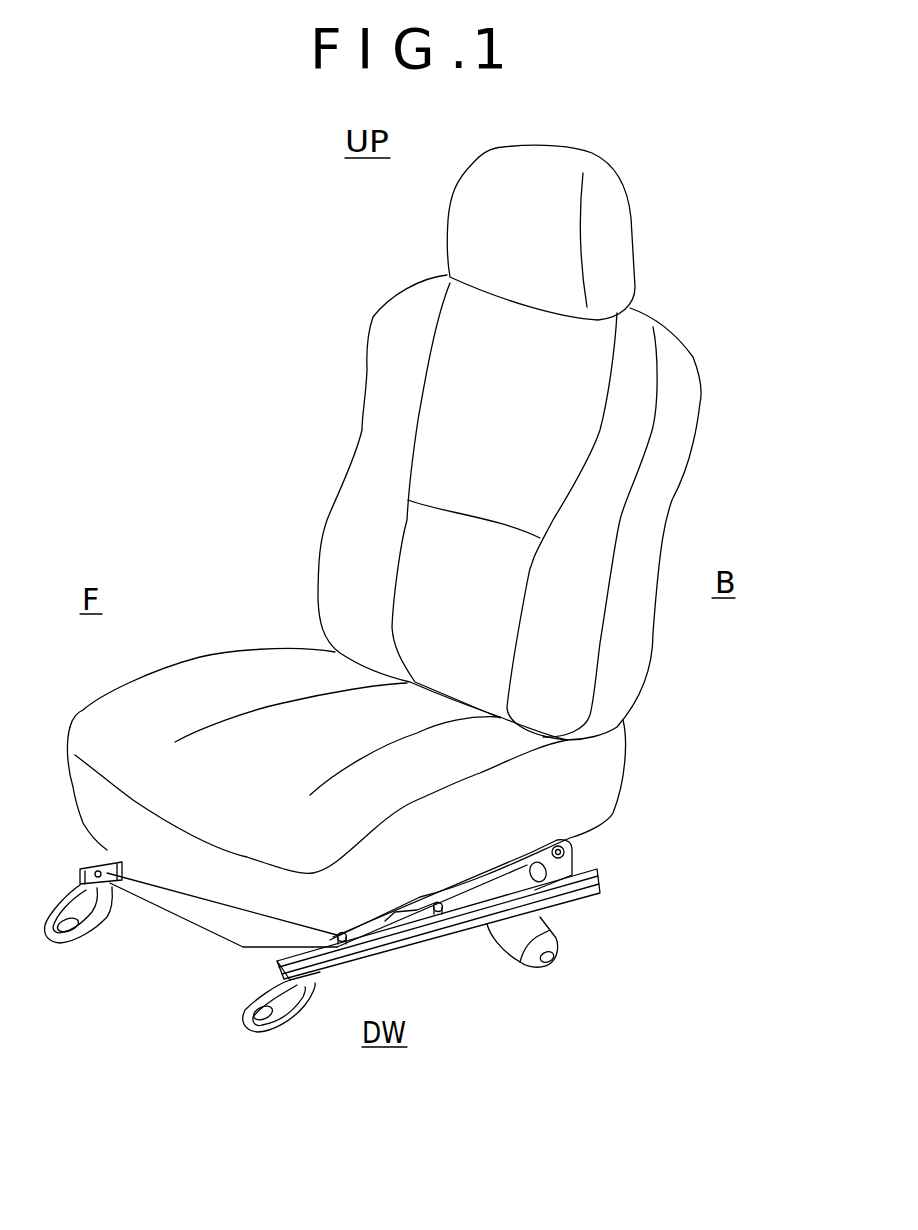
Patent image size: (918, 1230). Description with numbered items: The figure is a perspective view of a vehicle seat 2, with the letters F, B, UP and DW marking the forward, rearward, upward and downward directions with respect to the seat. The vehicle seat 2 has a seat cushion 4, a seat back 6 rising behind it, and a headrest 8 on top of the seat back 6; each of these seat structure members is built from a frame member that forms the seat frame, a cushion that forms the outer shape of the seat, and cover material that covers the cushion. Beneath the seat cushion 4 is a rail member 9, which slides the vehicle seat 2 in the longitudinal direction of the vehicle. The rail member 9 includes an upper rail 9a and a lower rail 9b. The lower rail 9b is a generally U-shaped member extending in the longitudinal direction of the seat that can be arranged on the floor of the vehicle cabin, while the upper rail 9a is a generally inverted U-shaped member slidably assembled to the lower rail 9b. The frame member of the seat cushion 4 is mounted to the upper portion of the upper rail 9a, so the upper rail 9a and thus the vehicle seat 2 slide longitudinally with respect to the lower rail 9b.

The vehicle seat 2 is at (662, 261).
The seat cushion 4 is at (242, 650).
The seat back 6 is at (350, 470).
The headrest 8 is at (448, 243).
The rail member 9 is at (654, 830).
The upper rail 9a is at (590, 862).
The lower rail 9b is at (598, 880).